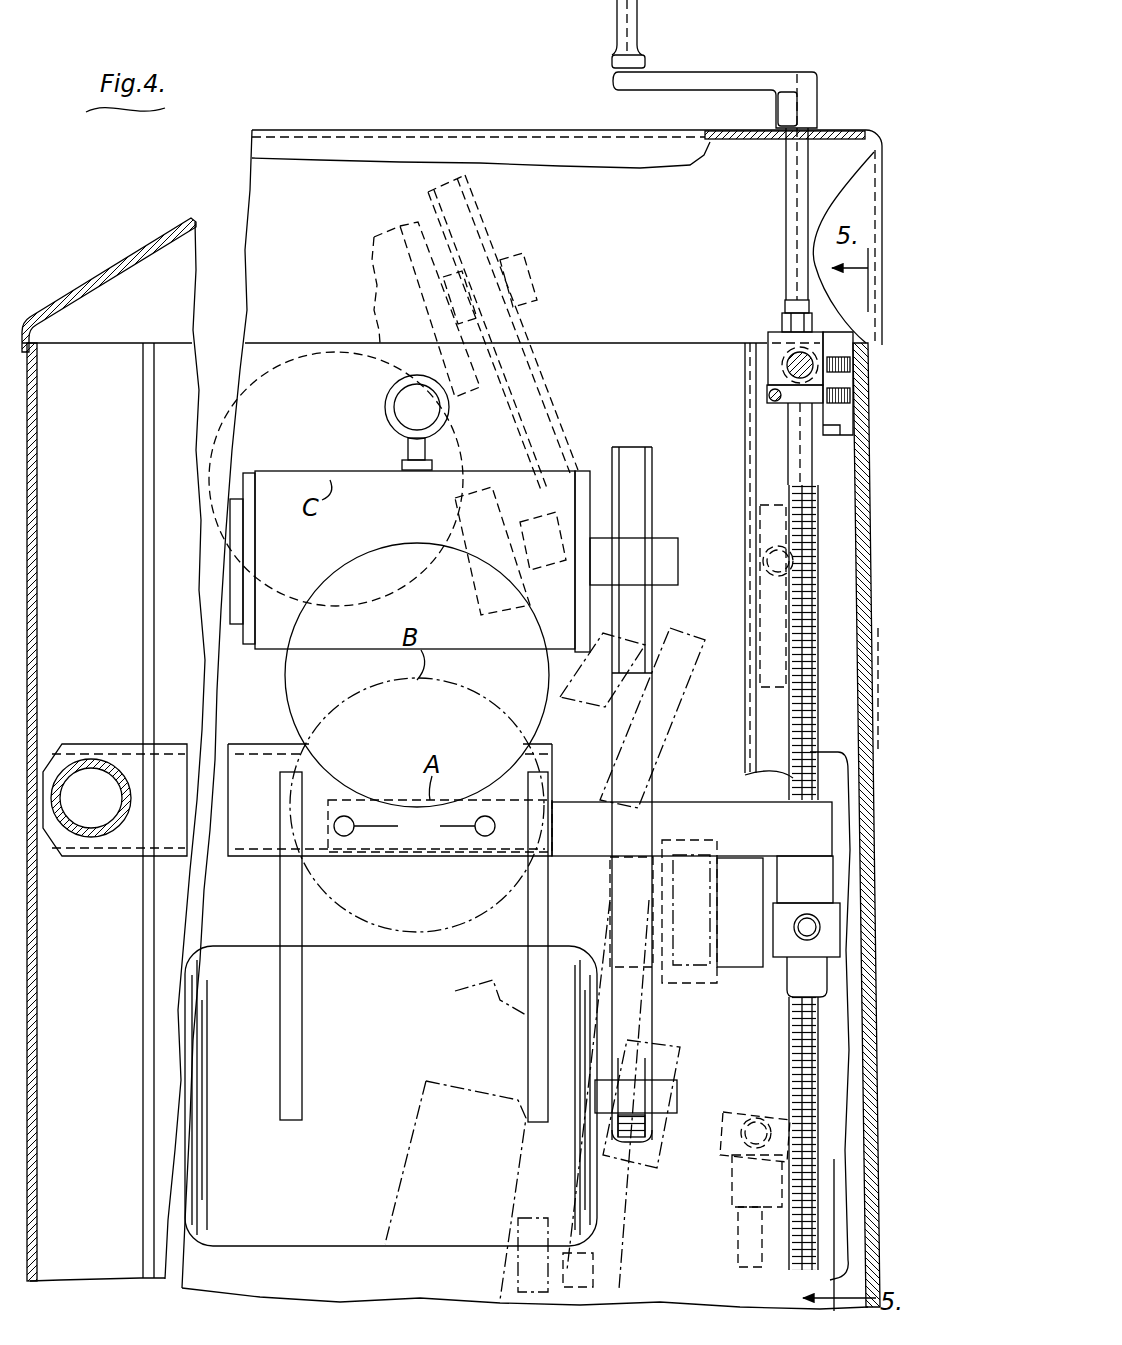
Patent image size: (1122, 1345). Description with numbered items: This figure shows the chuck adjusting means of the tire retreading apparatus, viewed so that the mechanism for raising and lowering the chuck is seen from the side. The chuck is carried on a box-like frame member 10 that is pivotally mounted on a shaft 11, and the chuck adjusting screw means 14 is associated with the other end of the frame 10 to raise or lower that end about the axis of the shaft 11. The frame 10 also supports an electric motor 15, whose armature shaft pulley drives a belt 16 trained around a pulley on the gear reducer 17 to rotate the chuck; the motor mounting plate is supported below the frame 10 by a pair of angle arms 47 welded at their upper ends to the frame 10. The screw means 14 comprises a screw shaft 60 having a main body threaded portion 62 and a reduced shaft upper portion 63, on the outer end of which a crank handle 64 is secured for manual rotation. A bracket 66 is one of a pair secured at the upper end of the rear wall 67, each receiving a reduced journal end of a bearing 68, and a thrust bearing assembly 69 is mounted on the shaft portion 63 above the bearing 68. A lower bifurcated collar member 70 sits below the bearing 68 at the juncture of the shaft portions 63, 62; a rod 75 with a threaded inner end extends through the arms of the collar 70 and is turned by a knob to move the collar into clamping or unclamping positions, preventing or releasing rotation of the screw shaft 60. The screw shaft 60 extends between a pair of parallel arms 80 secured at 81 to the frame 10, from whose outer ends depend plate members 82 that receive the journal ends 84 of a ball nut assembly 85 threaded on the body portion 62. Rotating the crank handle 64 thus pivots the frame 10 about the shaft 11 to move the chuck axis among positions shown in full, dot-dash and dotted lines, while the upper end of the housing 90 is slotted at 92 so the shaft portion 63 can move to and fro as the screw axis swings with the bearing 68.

The box-like frame member 10 is at (495, 530).
The shaft 11 is at (95, 840).
The chuck adjusting screw means 14 is at (819, 668).
The electric motor 15 is at (480, 1298).
The belt 16 is at (548, 434).
The gear reducer 17 is at (388, 236).
The angle arms 47 is at (282, 990).
The screw shaft 60 is at (745, 674).
The main body threaded portion 62 is at (822, 749).
The reduced shaft upper portion 63 is at (785, 280).
The crank handle 64 is at (735, 72).
The bracket 66 is at (835, 410).
The rear wall 67 is at (857, 487).
The bearing 68 is at (790, 365).
The thrust bearing assembly 69 is at (779, 321).
The lower bifurcated collar member 70 is at (800, 405).
The rod 75 is at (768, 394).
The parallel arms 80 is at (692, 478).
The securing point of arms 81 is at (440, 826).
The plate members 82 is at (778, 870).
The journal ends 84 is at (800, 925).
The ball nut assembly 85 is at (787, 978).
The housing 90 is at (494, 131).
The slot 92 is at (767, 139).